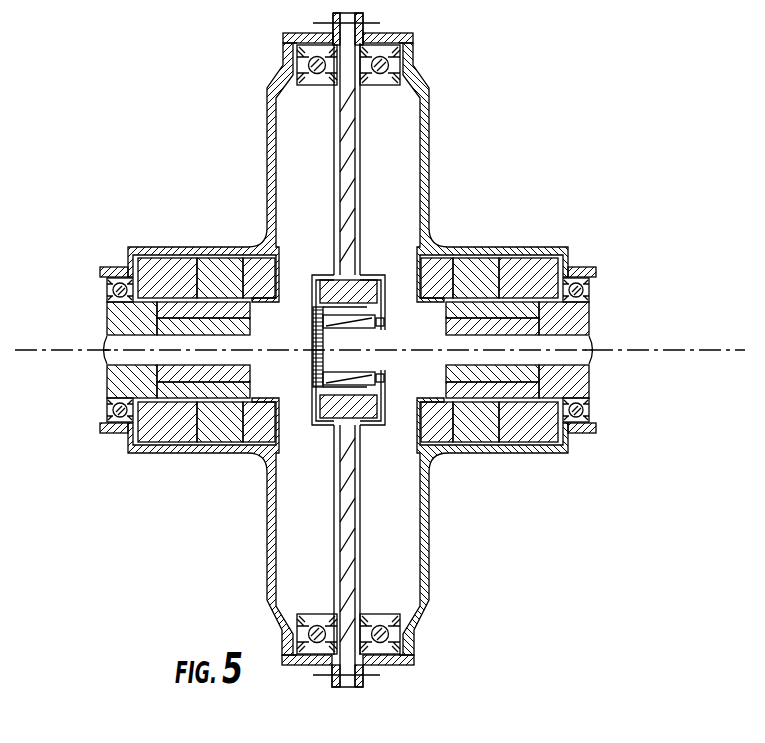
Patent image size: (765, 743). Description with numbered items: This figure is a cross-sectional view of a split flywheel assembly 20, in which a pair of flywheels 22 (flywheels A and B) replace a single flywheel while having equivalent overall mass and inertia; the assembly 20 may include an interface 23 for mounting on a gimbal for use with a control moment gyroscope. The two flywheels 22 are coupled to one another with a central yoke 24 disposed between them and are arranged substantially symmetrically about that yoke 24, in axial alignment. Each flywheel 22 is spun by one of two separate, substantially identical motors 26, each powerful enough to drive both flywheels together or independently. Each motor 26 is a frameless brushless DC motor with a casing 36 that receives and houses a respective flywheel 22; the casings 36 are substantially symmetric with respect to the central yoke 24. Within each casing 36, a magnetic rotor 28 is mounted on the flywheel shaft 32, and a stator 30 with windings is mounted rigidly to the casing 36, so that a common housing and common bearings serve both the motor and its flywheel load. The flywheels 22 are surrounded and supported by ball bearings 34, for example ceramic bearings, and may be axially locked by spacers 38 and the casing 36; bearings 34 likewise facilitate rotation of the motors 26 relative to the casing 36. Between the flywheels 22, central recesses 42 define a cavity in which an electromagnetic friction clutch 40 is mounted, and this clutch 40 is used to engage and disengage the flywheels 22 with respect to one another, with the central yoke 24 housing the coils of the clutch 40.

The flywheel assembly 20 is at (587, 193).
The flywheels 22 is at (300, 537).
The interface 23 is at (309, 23).
The central yoke 24 is at (357, 152).
The motors 26 is at (107, 298).
The magnetic rotor 28 is at (514, 388).
The stator 30 is at (538, 280).
The flywheel shaft 32 is at (583, 345).
The ball bearings 34 is at (401, 62).
The casing 36 is at (433, 603).
The spacers 38 is at (107, 312).
The clutch 40 is at (318, 302).
The central recesses 42 is at (341, 263).